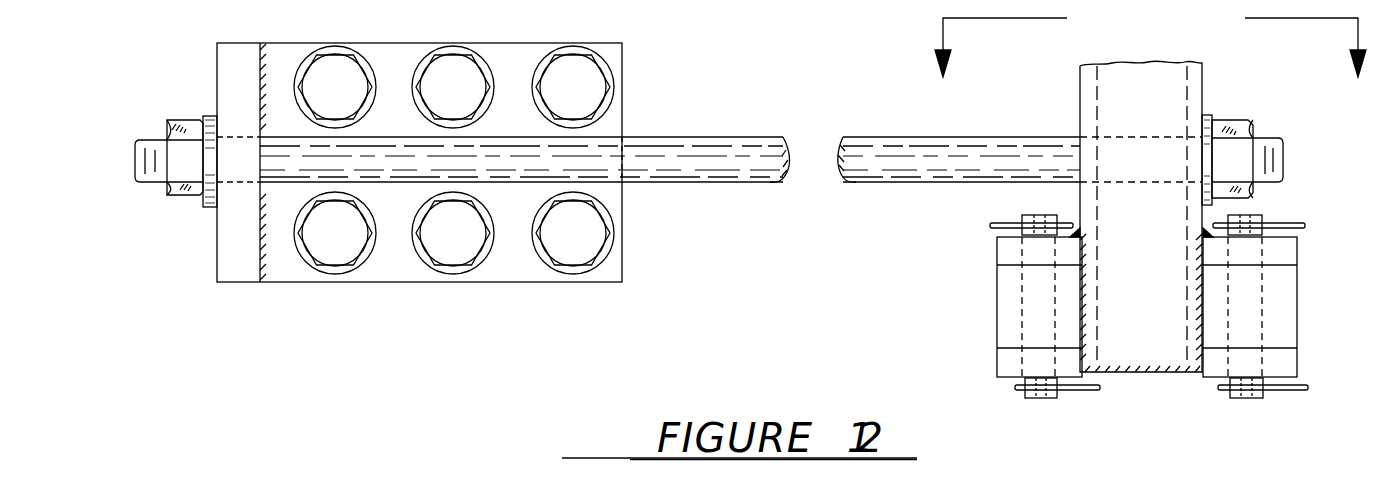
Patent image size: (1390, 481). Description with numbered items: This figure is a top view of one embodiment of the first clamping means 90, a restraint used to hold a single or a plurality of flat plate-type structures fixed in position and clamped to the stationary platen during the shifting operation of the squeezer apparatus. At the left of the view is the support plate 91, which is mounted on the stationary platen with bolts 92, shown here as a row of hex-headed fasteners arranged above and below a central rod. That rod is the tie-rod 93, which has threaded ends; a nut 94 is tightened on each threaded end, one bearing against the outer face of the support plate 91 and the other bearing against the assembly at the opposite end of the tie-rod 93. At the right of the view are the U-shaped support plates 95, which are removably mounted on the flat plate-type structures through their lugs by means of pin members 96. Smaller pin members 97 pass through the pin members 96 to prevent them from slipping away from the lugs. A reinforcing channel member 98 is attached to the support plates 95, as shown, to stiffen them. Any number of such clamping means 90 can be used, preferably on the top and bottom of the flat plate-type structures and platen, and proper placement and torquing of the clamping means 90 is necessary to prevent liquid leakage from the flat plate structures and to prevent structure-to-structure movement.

The first clamping means 90 is at (645, 305).
The support plate 91 is at (348, 282).
The bolts 92 is at (448, 73).
The tie-rod 93 is at (783, 140).
The nuts 94 is at (195, 190).
The U-shaped support plates 95 is at (1297, 248).
The pin members 96 is at (1245, 398).
The smaller pin members 97 is at (990, 226).
The reinforcing channel member 98 is at (1080, 130).